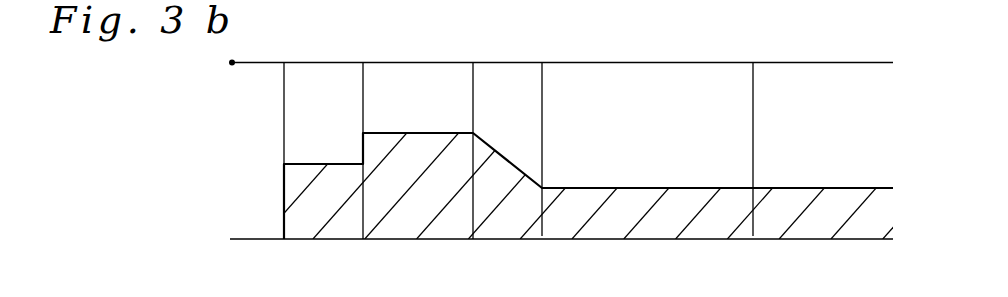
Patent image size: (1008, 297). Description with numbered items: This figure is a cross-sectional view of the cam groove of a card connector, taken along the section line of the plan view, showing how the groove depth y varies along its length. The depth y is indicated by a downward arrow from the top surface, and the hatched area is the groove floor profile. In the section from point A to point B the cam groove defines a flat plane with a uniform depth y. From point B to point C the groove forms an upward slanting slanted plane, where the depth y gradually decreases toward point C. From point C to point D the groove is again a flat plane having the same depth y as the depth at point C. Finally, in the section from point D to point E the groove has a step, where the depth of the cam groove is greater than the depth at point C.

The point A is at (753, 172).
The point B is at (542, 172).
The point C is at (473, 172).
The point D is at (362, 172).
The point E is at (282, 172).
The depth y is at (232, 62).